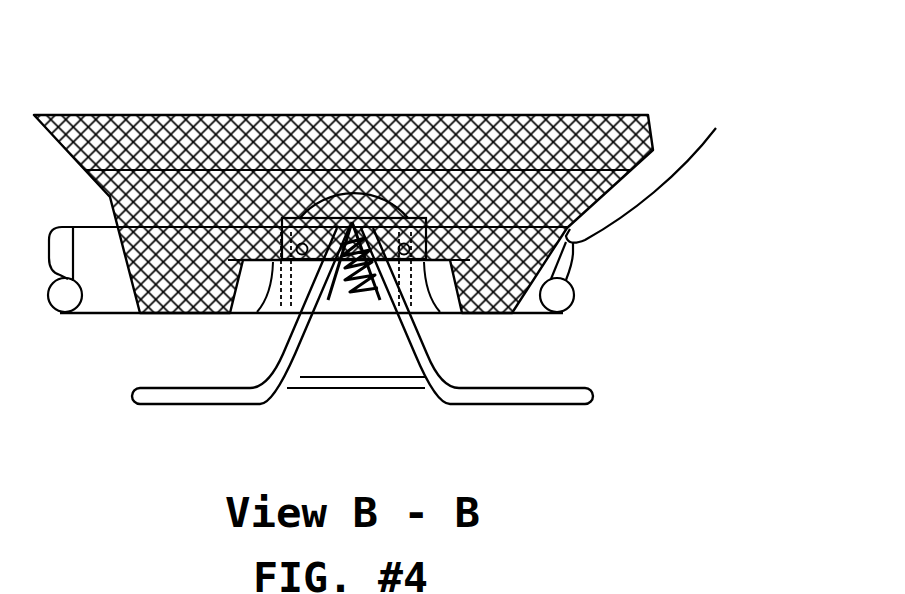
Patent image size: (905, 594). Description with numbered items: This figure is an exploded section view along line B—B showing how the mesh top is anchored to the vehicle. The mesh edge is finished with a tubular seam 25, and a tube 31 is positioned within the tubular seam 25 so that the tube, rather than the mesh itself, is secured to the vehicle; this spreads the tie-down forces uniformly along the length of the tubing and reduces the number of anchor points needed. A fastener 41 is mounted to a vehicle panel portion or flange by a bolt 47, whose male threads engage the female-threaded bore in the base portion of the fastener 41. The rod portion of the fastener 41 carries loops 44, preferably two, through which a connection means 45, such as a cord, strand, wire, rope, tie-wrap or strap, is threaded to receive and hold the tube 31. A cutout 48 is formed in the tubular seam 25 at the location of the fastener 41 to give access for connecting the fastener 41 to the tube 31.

The tubular seam 25 is at (510, 163).
The tube 31 is at (666, 167).
The bolt 47 is at (352, 195).
The cutout 48 is at (258, 318).
The fastener 41 is at (432, 314).
The loop 44 is at (245, 380).
The connection means 45 is at (572, 388).